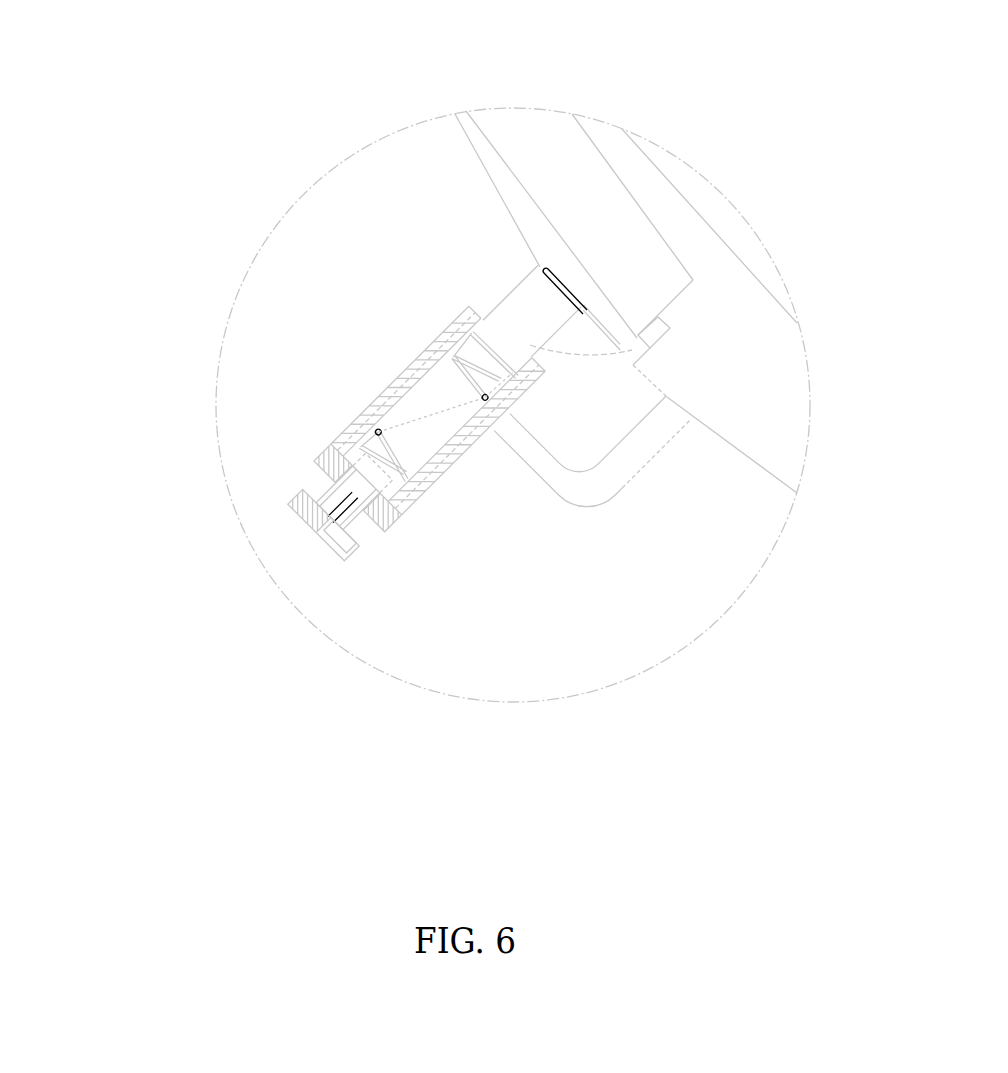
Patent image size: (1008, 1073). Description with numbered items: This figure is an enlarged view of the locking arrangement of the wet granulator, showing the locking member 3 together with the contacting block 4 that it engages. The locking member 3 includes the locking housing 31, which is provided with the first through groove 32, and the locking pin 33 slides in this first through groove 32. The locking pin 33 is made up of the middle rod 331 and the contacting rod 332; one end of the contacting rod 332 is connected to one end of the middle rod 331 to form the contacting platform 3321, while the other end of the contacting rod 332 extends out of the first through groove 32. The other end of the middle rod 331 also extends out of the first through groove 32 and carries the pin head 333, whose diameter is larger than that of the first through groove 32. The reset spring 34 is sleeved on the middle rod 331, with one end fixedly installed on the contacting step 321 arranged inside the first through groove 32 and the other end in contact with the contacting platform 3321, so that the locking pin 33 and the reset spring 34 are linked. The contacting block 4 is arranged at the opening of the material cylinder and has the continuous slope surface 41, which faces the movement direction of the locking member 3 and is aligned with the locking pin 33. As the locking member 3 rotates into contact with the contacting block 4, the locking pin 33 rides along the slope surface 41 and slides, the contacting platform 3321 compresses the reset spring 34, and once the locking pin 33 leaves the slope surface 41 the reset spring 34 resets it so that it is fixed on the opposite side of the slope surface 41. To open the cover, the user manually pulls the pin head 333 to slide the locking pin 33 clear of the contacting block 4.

The locking member 3 is at (354, 485).
The locking housing 31 is at (137, 283).
The first through groove 32 is at (247, 158).
The contacting step 321 is at (102, 348).
The locking pin 33 is at (475, 572).
The middle rod 331 is at (592, 746).
The contacting rod 332 is at (662, 746).
The pin head 333 is at (404, 619).
The contacting platform 3321 is at (298, 113).
The reset spring 34 is at (108, 586).
The contacting block 4 is at (360, 25).
The slope surface 41 is at (882, 693).